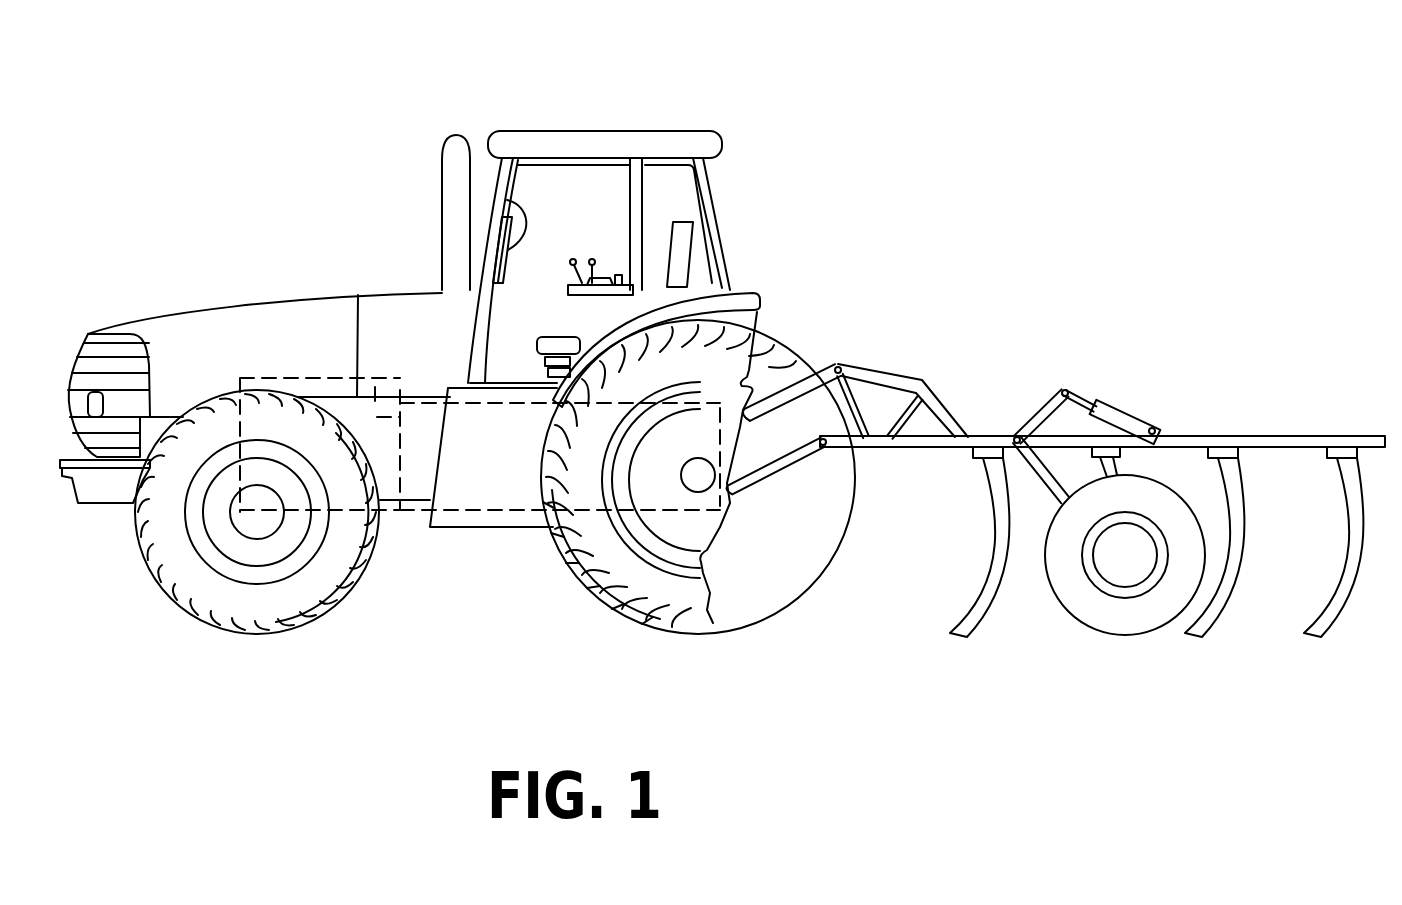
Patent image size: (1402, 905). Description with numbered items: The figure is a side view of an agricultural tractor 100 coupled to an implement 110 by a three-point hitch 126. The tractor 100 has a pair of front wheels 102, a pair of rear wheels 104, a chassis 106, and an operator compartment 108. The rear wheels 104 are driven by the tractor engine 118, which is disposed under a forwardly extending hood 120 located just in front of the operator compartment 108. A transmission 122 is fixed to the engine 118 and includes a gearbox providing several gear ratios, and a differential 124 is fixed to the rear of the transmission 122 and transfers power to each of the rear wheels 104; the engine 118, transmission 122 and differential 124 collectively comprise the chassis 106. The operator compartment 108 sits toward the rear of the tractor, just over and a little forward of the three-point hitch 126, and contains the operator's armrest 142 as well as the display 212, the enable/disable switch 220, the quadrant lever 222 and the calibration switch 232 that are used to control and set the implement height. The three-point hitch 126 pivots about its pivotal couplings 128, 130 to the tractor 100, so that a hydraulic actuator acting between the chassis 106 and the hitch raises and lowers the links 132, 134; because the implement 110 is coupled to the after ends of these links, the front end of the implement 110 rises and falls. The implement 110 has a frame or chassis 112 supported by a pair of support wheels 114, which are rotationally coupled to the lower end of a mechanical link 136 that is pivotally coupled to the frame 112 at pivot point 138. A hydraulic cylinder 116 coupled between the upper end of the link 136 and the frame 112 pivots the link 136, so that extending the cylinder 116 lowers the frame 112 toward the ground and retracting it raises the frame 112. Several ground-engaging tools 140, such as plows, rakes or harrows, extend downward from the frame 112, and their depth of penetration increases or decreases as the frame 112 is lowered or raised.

The agricultural tractor 100 is at (306, 353).
The front wheels 102 is at (148, 566).
The rear wheels 104 is at (671, 467).
The chassis 106 is at (413, 513).
The operator compartment 108 is at (635, 218).
The implement 110 is at (1102, 493).
The frame 112 is at (987, 436).
The support wheels 114 is at (1153, 635).
The hydraulic cylinder 116 is at (1120, 403).
The tractor engine 118 is at (290, 377).
The hood 120 is at (170, 320).
The transmission 122 is at (431, 396).
The differential 124 is at (614, 398).
The three-point hitch 126 is at (847, 371).
The pivotal coupling 128 is at (725, 503).
The pivotal coupling 130 is at (762, 432).
The link 132 is at (798, 360).
The link 134 is at (769, 479).
The mechanical link 136 is at (1025, 422).
The pivot point 138 is at (1012, 450).
The ground-engaging tools 140 is at (987, 550).
The operator's armrest 142 is at (584, 181).
The display 212 is at (527, 224).
The enable/disable switch 220 is at (616, 278).
The quadrant lever 222 is at (592, 258).
The calibration switch 232 is at (601, 274).